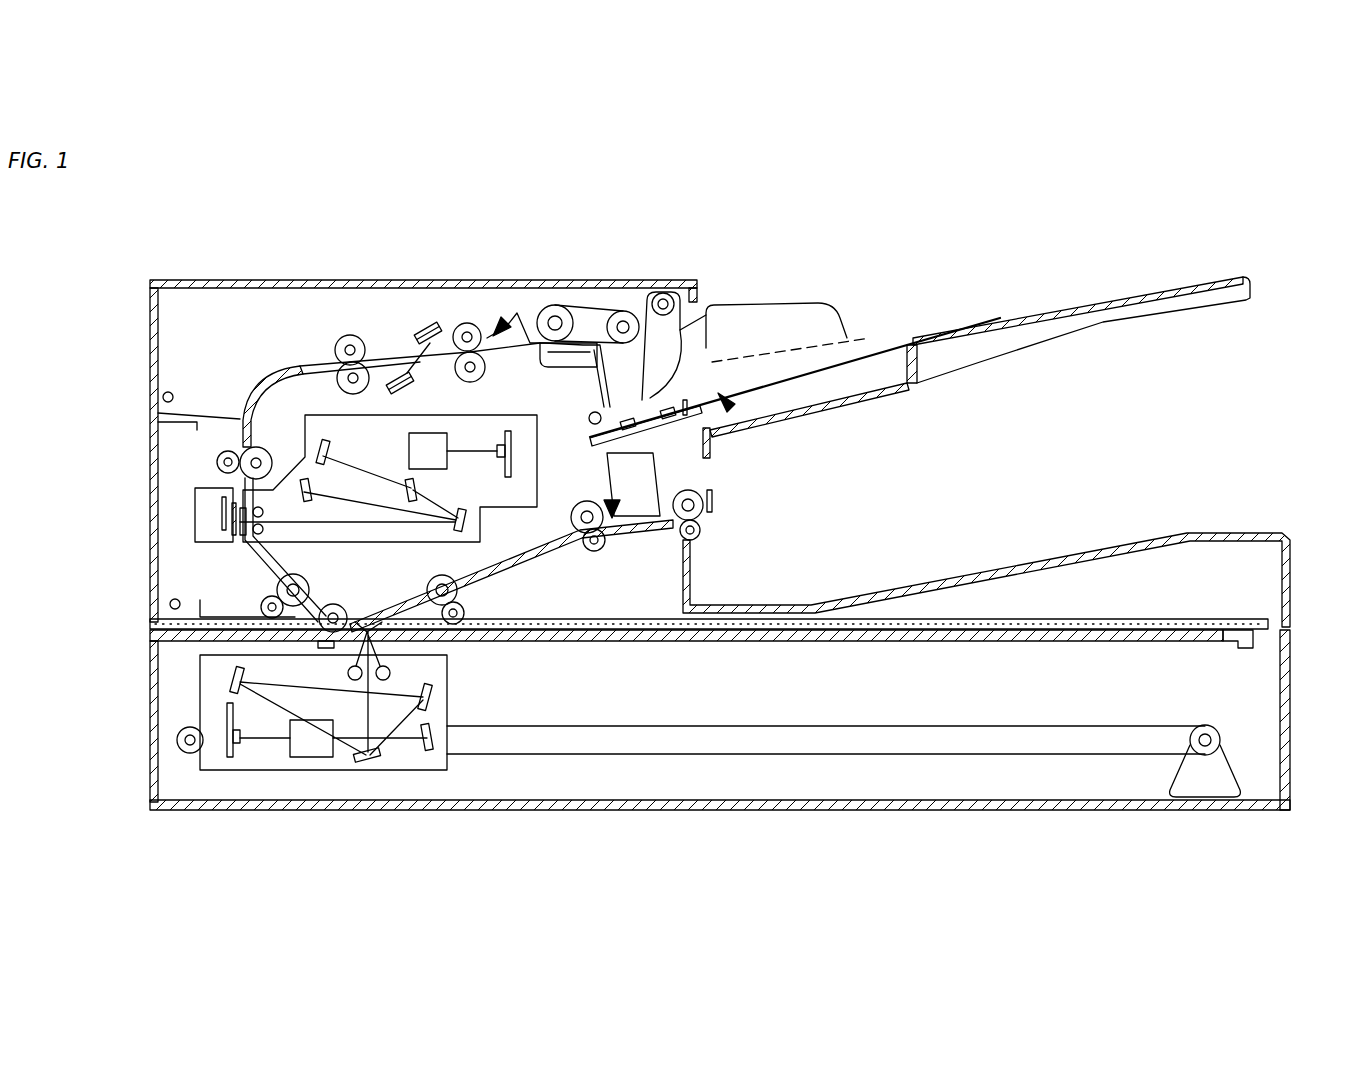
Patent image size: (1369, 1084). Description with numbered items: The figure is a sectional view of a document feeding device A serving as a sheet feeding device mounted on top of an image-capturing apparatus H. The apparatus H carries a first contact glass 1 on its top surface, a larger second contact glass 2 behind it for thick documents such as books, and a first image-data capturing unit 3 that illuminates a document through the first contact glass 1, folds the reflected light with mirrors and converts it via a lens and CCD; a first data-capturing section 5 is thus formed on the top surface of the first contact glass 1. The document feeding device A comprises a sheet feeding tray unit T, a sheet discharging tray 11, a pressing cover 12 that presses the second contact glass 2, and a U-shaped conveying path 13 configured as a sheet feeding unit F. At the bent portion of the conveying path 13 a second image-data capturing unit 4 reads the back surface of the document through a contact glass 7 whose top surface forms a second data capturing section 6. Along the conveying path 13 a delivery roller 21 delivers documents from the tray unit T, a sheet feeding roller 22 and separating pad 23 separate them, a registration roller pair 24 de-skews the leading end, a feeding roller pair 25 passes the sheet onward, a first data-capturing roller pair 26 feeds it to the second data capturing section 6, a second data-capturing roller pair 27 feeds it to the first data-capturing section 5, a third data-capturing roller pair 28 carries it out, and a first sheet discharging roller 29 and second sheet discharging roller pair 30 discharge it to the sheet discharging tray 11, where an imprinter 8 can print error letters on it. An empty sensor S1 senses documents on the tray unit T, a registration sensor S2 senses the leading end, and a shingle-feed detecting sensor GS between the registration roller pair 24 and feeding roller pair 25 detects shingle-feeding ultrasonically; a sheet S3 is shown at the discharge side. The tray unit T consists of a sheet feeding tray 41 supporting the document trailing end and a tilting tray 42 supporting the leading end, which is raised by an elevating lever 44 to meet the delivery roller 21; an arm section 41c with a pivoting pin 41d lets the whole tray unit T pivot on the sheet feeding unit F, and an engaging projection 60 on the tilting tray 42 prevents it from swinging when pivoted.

The sheet feeding unit F is at (233, 229).
The image-capturing apparatus H is at (636, 818).
The document feeding device A is at (928, 258).
The sheet feeding tray unit T is at (1092, 287).
The first contact glass 1 is at (382, 643).
The second contact glass 2 is at (690, 640).
The first image-data capturing unit 3 is at (457, 711).
The second image-data capturing unit 4 is at (503, 401).
The first data-capturing section 5 is at (382, 605).
The second data capturing section 6 is at (287, 530).
The contact glass 7 is at (258, 536).
The imprinter 8 is at (647, 522).
The sheet discharging tray 11 is at (1062, 538).
The pressing cover 12 is at (1240, 617).
The U-shaped conveying path 13 is at (254, 371).
The delivery roller 21 is at (623, 310).
The sheet feeding roller 22 is at (555, 305).
The separating pad 23 is at (558, 367).
The registration roller pair 24 is at (465, 322).
The feeding roller pair 25 is at (340, 340).
The first data-capturing roller pair 26 is at (216, 461).
The second data-capturing roller pair 27 is at (260, 606).
The third data-capturing roller pair 28 is at (466, 614).
The first sheet discharging roller 29 is at (594, 553).
The second sheet discharging roller pair 30 is at (701, 535).
The sheet feeding tray 41 is at (988, 325).
The arm section 41c is at (690, 345).
The pivoting pin 41d is at (664, 293).
The tilting tray 42 is at (822, 330).
The elevating lever 44 is at (596, 436).
The engaging projection 60 is at (738, 452).
The shingle-feed detecting sensor GS is at (408, 323).
The empty sensor S1 is at (730, 405).
The registration sensor S2 is at (506, 322).
The discharged document sheet S3 is at (613, 500).